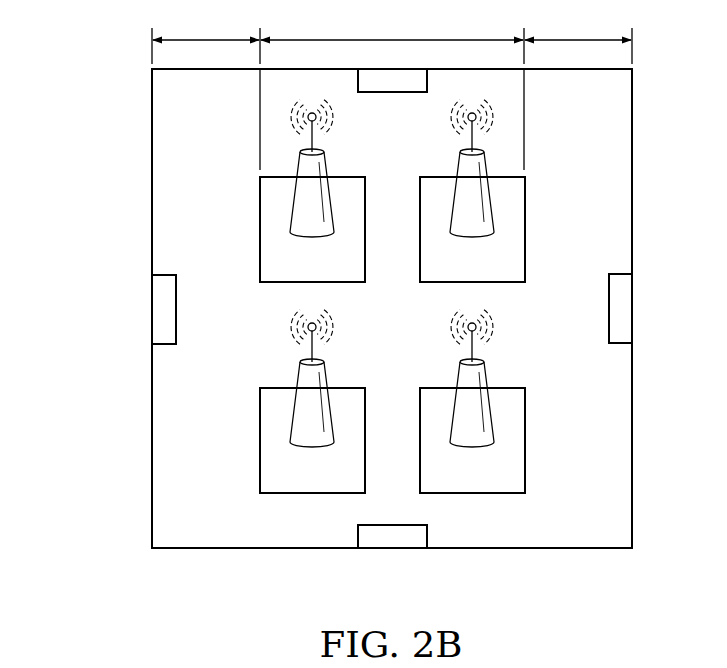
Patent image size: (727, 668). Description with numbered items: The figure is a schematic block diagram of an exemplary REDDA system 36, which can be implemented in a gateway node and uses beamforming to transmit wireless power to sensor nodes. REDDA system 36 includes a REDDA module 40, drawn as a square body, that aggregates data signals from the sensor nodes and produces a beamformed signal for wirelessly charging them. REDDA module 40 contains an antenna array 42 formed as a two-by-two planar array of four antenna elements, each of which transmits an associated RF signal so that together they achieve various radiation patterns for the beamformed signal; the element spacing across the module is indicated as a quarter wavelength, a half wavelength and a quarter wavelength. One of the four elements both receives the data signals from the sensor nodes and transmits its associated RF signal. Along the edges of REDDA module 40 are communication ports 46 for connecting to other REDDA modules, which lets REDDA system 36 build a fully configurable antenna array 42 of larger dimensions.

The REDDA system 36 is at (104, 210).
The REDDA module 40 is at (148, 389).
The antenna array 42 is at (197, 182).
The communication port 46 is at (160, 308).